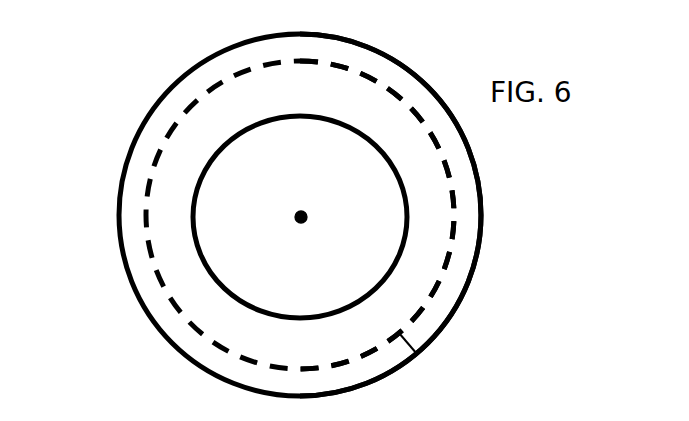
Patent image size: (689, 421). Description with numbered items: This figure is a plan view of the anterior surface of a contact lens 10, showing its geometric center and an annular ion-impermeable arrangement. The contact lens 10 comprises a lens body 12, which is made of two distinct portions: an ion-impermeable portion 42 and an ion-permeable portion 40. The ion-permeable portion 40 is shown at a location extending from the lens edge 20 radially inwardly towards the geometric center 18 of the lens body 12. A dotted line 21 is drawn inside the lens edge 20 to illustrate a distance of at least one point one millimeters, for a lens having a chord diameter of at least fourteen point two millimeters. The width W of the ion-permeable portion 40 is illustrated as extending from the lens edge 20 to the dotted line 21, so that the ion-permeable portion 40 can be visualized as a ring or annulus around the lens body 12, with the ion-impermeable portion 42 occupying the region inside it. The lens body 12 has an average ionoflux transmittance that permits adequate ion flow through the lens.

The contact lens 10 is at (140, 56).
The lens body 12 is at (170, 173).
The geometric center 18 is at (296, 219).
The lens edge 20 is at (118, 228).
The dotted line 21 is at (453, 237).
The ion-permeable portion 40 is at (470, 192).
The ion-impermeable portion 42 is at (355, 165).
The width W is at (405, 345).